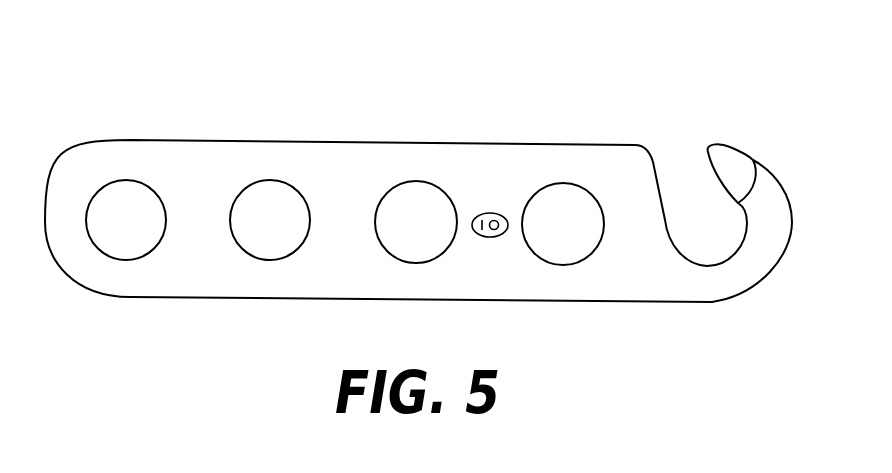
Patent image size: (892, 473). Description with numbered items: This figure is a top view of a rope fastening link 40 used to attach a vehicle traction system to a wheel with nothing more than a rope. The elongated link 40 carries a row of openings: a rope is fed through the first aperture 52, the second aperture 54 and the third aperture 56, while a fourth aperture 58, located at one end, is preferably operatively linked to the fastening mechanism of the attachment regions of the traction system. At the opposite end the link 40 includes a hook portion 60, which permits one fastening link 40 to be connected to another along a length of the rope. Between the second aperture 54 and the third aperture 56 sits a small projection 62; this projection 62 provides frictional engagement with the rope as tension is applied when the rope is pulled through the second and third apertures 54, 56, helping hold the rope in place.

The rope fastening link 40 is at (408, 75).
The first aperture 52 is at (297, 184).
The second aperture 54 is at (448, 190).
The third aperture 56 is at (590, 190).
The fourth aperture 58 is at (151, 183).
The hook portion 60 is at (753, 160).
The projection 62 is at (490, 237).